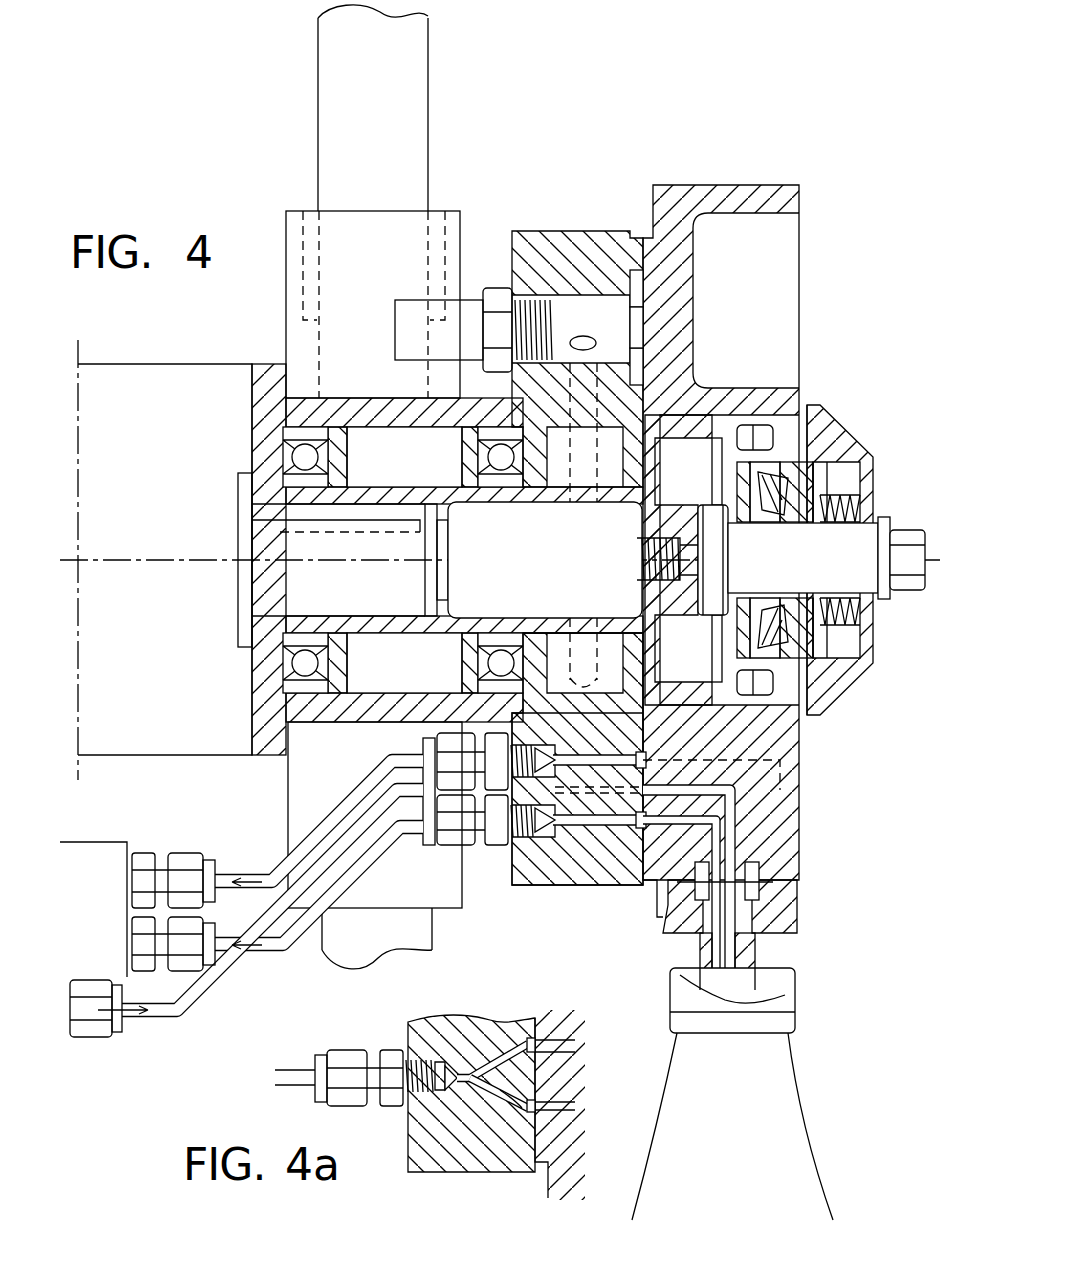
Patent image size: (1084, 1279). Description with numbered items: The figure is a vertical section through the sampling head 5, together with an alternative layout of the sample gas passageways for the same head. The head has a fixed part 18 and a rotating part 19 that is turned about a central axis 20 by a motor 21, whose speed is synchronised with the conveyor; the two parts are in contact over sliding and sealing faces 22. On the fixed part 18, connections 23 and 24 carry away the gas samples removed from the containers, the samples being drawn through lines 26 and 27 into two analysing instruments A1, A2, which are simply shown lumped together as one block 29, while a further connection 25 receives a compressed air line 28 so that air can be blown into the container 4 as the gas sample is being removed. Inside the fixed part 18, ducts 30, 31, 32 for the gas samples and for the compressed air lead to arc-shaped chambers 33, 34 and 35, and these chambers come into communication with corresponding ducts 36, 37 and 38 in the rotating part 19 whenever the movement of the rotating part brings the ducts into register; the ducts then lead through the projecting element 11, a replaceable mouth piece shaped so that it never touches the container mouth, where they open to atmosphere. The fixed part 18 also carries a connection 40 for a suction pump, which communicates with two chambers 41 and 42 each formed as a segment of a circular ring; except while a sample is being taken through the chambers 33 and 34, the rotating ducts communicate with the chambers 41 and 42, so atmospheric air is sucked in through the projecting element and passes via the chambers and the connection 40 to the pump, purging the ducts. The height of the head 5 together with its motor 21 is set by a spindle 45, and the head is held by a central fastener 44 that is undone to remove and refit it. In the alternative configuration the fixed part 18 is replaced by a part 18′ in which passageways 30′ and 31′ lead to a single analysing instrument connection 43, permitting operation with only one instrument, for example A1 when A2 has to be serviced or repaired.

In FIG. 4, the nozzle 4 is at (785, 1078).
In FIG. 4, the sampling head 5 is at (497, 184).
In FIG. 4, the projecting element 11 is at (753, 953).
In FIG. 4, the fixed part 18 is at (593, 240).
In FIG. 4A, the replacement fixed part 18′ is at (496, 1114).
In FIG. 4, the rotating part 19 is at (714, 197).
In FIG. 4, the central axis 20 is at (145, 563).
In FIG. 4, the motor 21 is at (152, 382).
In FIG. 4, the sliding and sealing faces 22 is at (646, 886).
In FIG. 4, the connection 23 is at (423, 750).
In FIG. 4, the connection 24 is at (450, 830).
In FIG. 4, the compressed air connection 25 is at (480, 800).
In FIG. 4, the line 26 is at (280, 872).
In FIG. 4, the line 27 is at (283, 940).
In FIG. 4, the compressed air line 28 is at (232, 980).
In FIG. 4, the block 29 is at (105, 855).
In FIG. 4, the duct 30 is at (558, 770).
In FIG. 4A, the passageway 30′ is at (468, 1086).
In FIG. 4, the duct 31 is at (566, 756).
In FIG. 4A, the passageway 31′ is at (452, 1082).
In FIG. 4, the duct 32 is at (572, 800).
In FIG. 4, the arc-shaped chamber 33 is at (607, 830).
In FIG. 4A, the arc-shaped chamber 33 is at (485, 1092).
In FIG. 4, the arc-shaped chamber 34 is at (639, 756).
In FIG. 4A, the arc-shaped chamber 34 is at (528, 1040).
In FIG. 4, the arc-shaped chamber 35 is at (556, 745).
In FIG. 4, the duct 36 is at (722, 848).
In FIG. 4A, the duct 36 is at (560, 1113).
In FIG. 4, the duct 37 is at (752, 760).
In FIG. 4A, the duct 37 is at (552, 1043).
In FIG. 4, the duct 38 is at (742, 808).
In FIG. 4, the suction pump connection 40 is at (410, 318).
In FIG. 4, the chamber 41 is at (645, 287).
In FIG. 4, the chamber 42 is at (645, 367).
In FIG. 4A, the single analysing instrument connection 43 is at (345, 1070).
In FIG. 4, the lock nut 44 is at (903, 526).
In FIG. 4, the spindle 45 is at (318, 160).
In FIG. 4, the analysing instrument A1 is at (139, 880).
In FIG. 4, the analysing instrument A2 is at (137, 977).